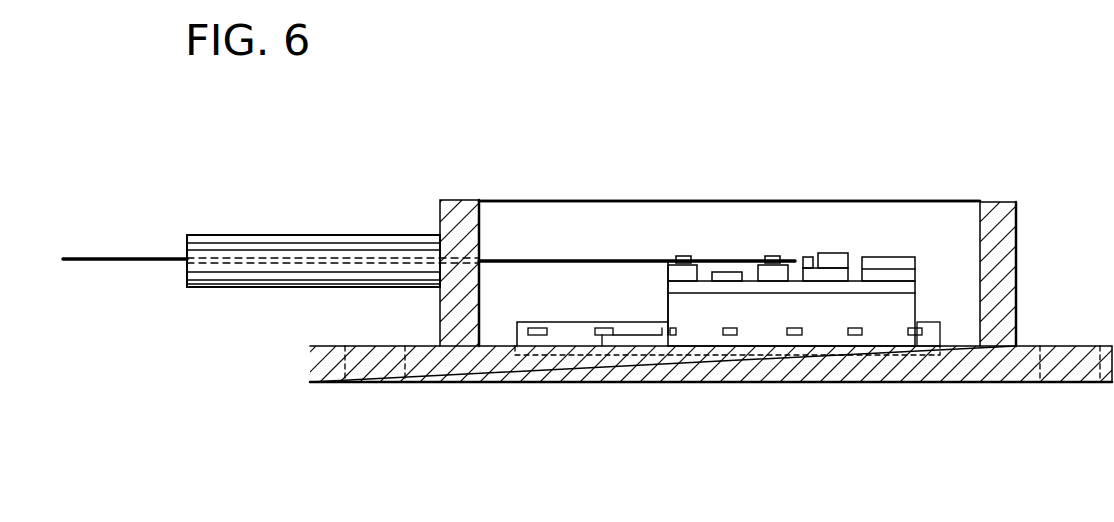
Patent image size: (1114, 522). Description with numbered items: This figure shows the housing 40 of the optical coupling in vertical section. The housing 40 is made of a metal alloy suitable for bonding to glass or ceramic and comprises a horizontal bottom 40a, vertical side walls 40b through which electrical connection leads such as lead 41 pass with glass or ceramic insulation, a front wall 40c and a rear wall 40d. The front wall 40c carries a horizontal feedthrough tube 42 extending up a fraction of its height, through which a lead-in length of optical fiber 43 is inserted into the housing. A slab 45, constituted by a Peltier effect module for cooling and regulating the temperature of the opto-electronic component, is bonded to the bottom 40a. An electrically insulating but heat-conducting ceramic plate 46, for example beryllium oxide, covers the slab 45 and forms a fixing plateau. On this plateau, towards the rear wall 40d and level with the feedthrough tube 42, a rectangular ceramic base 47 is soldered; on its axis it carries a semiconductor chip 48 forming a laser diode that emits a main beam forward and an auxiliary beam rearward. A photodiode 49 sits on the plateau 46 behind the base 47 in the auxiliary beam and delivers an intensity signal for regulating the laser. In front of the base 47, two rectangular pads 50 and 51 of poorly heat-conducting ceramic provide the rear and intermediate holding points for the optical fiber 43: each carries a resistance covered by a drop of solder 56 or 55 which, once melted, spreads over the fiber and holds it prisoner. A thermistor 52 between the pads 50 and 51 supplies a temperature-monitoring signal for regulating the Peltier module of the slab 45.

The housing 40 is at (423, 195).
The horizontal bottom 40a is at (493, 347).
The vertical side walls 40b is at (742, 200).
The front wall 40c is at (458, 208).
The rear wall 40d is at (998, 207).
The electrical connection leads 41 is at (530, 330).
The horizontal feedthrough tube 42 is at (280, 243).
The optical fiber 43 is at (120, 258).
The slab 45 is at (703, 335).
The ceramic plate 46 is at (860, 292).
The base 47 is at (835, 275).
The chip of semiconductor material 48 is at (808, 257).
The photodiode 49 is at (895, 262).
The rectangular pad 50 is at (782, 273).
The rectangular pad 51 is at (690, 272).
The thermistor 52 is at (733, 277).
The drop of solder 55 is at (683, 256).
The drop of solder 56 is at (772, 256).